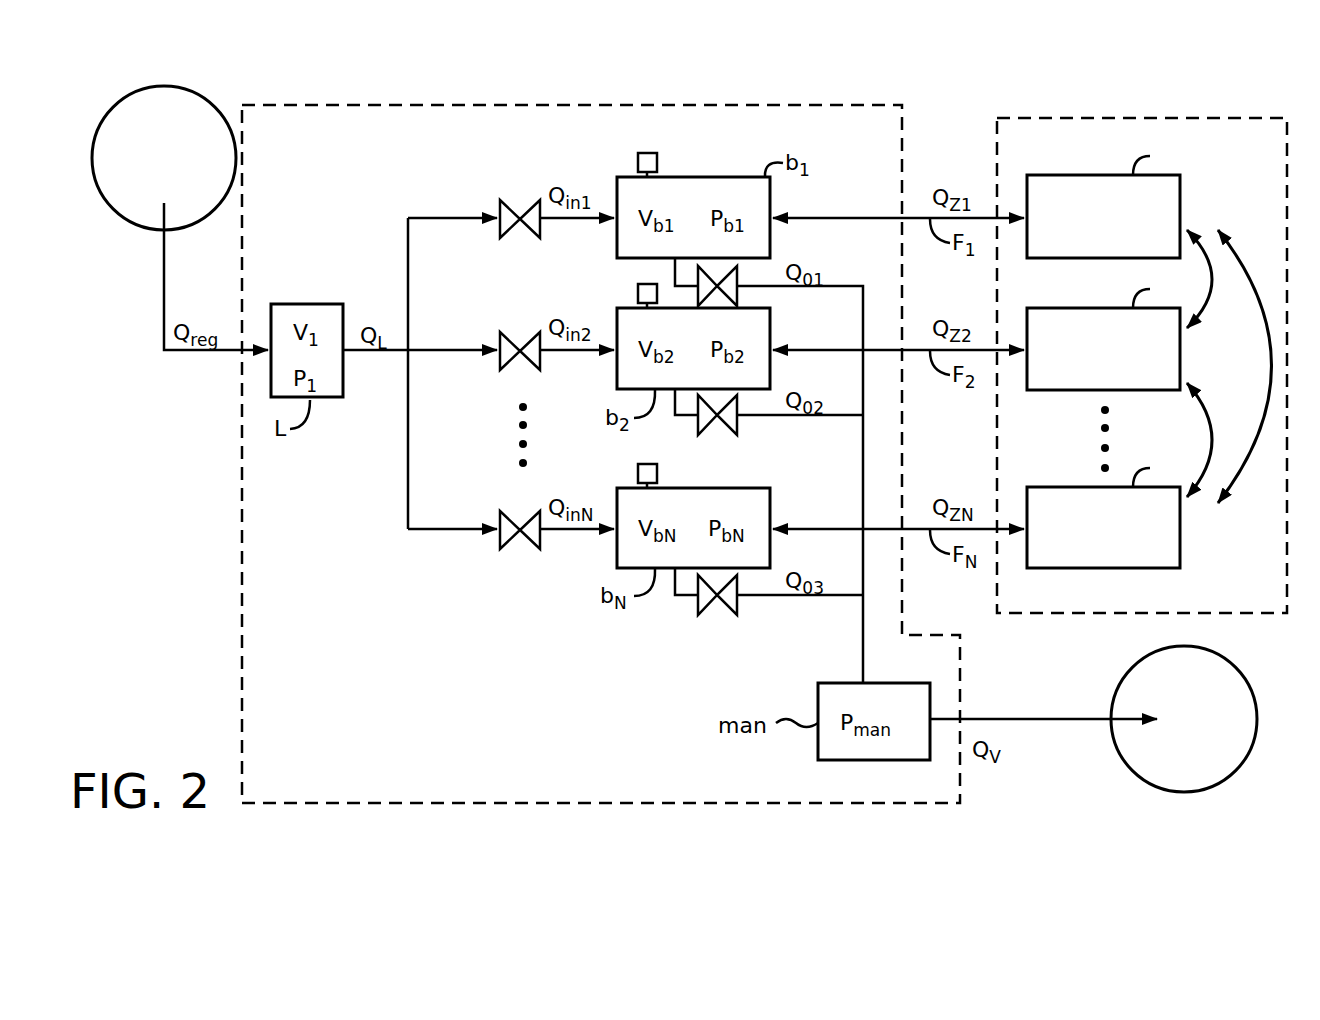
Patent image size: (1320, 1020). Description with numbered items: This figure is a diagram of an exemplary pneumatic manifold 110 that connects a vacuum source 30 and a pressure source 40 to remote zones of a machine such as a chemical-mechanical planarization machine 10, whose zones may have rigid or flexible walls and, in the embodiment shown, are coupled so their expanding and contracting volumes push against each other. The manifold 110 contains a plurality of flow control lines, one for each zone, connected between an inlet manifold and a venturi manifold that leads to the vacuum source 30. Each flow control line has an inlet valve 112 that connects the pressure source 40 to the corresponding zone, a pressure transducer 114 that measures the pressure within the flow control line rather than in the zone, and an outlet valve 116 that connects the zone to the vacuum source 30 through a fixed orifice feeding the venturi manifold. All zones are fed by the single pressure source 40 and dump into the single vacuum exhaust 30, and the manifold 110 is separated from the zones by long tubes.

The chemical-mechanical planarization (CMP) machine 10 is at (1137, 96).
The vacuum source 30 is at (1236, 760).
The pressure source 40 is at (192, 104).
The pneumatic manifold 110 is at (660, 86).
The inlet valve 112 is at (515, 200).
The pressure transducer 114 is at (658, 162).
The outlet valve 116 is at (737, 298).